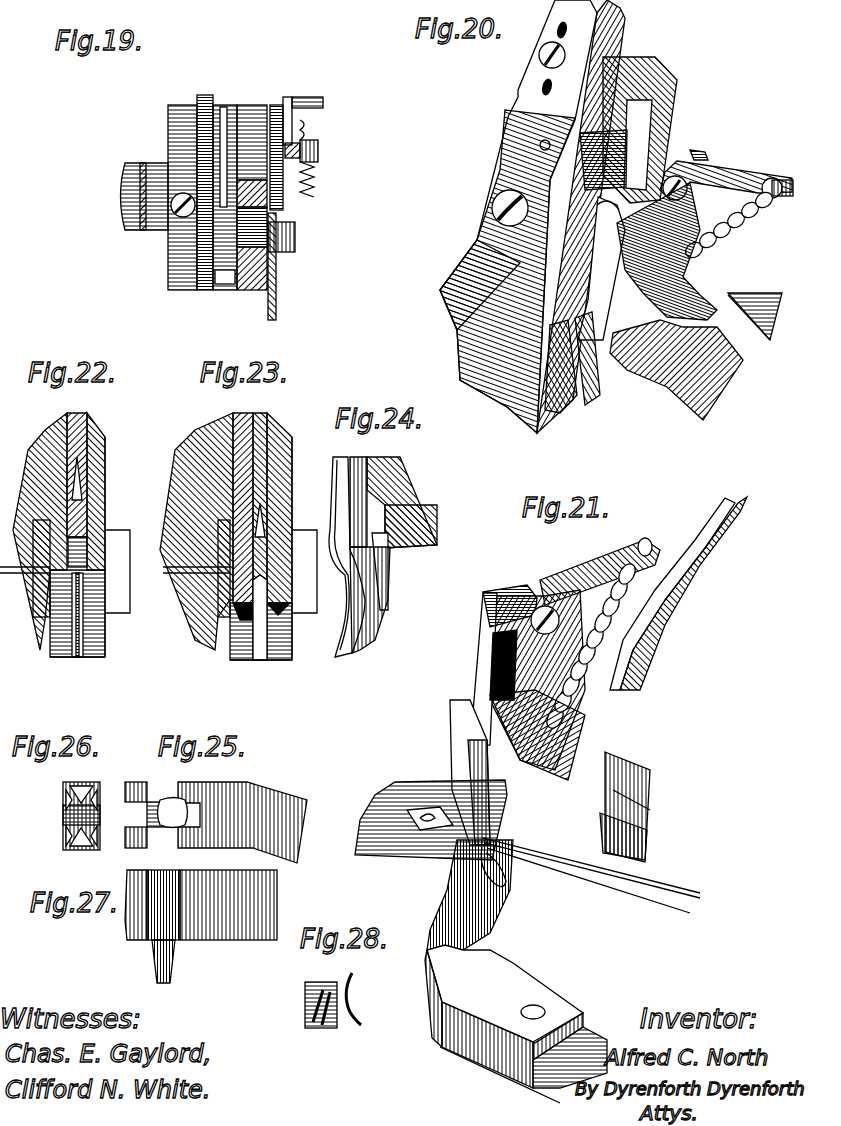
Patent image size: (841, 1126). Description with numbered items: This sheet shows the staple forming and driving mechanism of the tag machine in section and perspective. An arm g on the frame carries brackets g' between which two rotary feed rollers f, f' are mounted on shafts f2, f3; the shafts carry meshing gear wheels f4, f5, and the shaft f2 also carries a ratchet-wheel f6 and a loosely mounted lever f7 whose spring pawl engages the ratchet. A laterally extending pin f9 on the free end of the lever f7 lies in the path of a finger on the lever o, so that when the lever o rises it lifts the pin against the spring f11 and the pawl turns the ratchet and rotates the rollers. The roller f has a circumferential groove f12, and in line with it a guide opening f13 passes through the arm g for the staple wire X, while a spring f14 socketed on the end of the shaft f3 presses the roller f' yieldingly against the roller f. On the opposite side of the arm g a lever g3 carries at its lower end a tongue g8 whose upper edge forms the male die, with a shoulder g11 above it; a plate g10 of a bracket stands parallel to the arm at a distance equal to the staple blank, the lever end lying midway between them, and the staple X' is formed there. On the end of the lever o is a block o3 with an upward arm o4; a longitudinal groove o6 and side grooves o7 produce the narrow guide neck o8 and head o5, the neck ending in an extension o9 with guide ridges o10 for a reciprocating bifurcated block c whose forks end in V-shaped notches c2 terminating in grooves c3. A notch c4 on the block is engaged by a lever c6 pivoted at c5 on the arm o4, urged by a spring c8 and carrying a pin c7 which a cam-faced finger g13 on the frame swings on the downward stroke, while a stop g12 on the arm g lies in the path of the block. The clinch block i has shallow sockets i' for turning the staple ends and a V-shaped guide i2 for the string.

In FIG. 20, the arm g is at (532, 216).
In FIG. 21, the arm g is at (484, 1088).
In FIG. 22, the arm g is at (59, 535).
In FIG. 23, the arm g is at (226, 536).
In FIG. 19, the bracket g' is at (145, 181).
In FIG. 22, the lever g3 is at (87, 657).
In FIG. 23, the lever g3 is at (272, 660).
In FIG. 24, the lever g3 is at (345, 655).
In FIG. 22, the tongue g8 is at (85, 635).
In FIG. 23, the tongue g8 is at (258, 645).
In FIG. 24, the tongue g8 is at (372, 630).
In FIG. 22, the arm or plate g10 is at (130, 540).
In FIG. 23, the arm or plate g10 is at (305, 613).
In FIG. 24, the shoulder g11 is at (348, 545).
In FIG. 20, the stop g12 is at (660, 68).
In FIG. 21, the cam-faced finger g13 is at (660, 622).
In FIG. 19, the feed roller f is at (252, 181).
In FIG. 19, the feed roller f' is at (225, 294).
In FIG. 19, the shaft f2 is at (305, 150).
In FIG. 19, the shaft f3 is at (278, 240).
In FIG. 19, the gear wheel f4 is at (204, 96).
In FIG. 19, the gear wheel f5 is at (203, 292).
In FIG. 19, the ratchet-wheel f6 is at (278, 105).
In FIG. 19, the lever f7 is at (289, 105).
In FIG. 19, the pin f9 is at (323, 101).
In FIG. 19, the spring f11 is at (316, 185).
In FIG. 19, the circumferential groove f12 is at (224, 106).
In FIG. 22, the guide opening f13 is at (33, 540).
In FIG. 23, the guide opening f13 is at (222, 600).
In FIG. 19, the spring f14 is at (277, 296).
In FIG. 20, the bifurcated block c is at (608, 238).
In FIG. 21, the bifurcated block c is at (483, 650).
In FIG. 22, the bifurcated block c is at (88, 467).
In FIG. 23, the bifurcated block c is at (250, 536).
In FIG. 26, the bifurcated block c is at (72, 816).
In FIG. 26, the V-shaped notch c2 is at (80, 792).
In FIG. 26, the groove c3 is at (91, 790).
In FIG. 20, the notch c4 is at (612, 212).
In FIG. 21, the notch c4 is at (485, 608).
In FIG. 20, the pivot c5 is at (678, 176).
In FIG. 21, the pivot c5 is at (550, 606).
In FIG. 20, the lever c6 is at (735, 175).
In FIG. 21, the lever c6 is at (615, 570).
In FIG. 20, the pin c7 is at (776, 180).
In FIG. 21, the pin c7 is at (648, 538).
In FIG. 20, the spring c8 is at (735, 228).
In FIG. 21, the spring c8 is at (622, 666).
In FIG. 20, the lever o is at (676, 370).
In FIG. 21, the lever o is at (646, 757).
In FIG. 20, the block o3 is at (698, 302).
In FIG. 21, the block o3 is at (608, 836).
In FIG. 24, the block o3 is at (402, 502).
In FIG. 25, the block o3 is at (304, 846).
In FIG. 20, the arm o4 is at (703, 155).
In FIG. 21, the arm o4 is at (580, 728).
In FIG. 21, the head o5 is at (455, 742).
In FIG. 23, the head o5 is at (326, 473).
In FIG. 24, the head o5 is at (336, 474).
In FIG. 25, the head o5 is at (138, 790).
In FIG. 27, the head o5 is at (130, 938).
In FIG. 25, the longitudinal groove o6 is at (133, 828).
In FIG. 25, the groove o7 is at (157, 815).
In FIG. 22, the guide neck o8 is at (95, 451).
In FIG. 23, the guide neck o8 is at (285, 451).
In FIG. 24, the guide neck o8 is at (334, 456).
In FIG. 27, the guide neck o8 is at (165, 902).
In FIG. 22, the extension o9 is at (84, 510).
In FIG. 23, the extension o9 is at (268, 567).
In FIG. 25, the extension o9 is at (160, 827).
In FIG. 27, the extension o9 is at (180, 953).
In FIG. 22, the guide ridge o10 is at (84, 480).
In FIG. 23, the guide ridge o10 is at (268, 538).
In FIG. 24, the guide ridge o10 is at (390, 562).
In FIG. 25, the guide ridge o10 is at (180, 816).
In FIG. 27, the guide ridge o10 is at (155, 972).
In FIG. 21, the angular block i is at (562, 970).
In FIG. 28, the angular block i is at (321, 1022).
In FIG. 28, the shallow socket i' is at (321, 989).
In FIG. 21, the V-shaped guide i2 is at (512, 868).
In FIG. 28, the V-shaped guide i2 is at (362, 1000).
In FIG. 22, the staple wire X is at (16, 607).
In FIG. 23, the staple wire X is at (158, 547).
In FIG. 24, the staple wire X is at (405, 580).
In FIG. 23, the section line X' is at (218, 641).